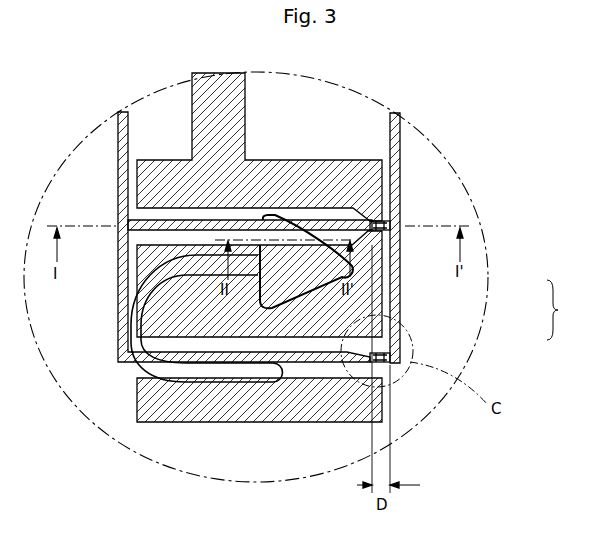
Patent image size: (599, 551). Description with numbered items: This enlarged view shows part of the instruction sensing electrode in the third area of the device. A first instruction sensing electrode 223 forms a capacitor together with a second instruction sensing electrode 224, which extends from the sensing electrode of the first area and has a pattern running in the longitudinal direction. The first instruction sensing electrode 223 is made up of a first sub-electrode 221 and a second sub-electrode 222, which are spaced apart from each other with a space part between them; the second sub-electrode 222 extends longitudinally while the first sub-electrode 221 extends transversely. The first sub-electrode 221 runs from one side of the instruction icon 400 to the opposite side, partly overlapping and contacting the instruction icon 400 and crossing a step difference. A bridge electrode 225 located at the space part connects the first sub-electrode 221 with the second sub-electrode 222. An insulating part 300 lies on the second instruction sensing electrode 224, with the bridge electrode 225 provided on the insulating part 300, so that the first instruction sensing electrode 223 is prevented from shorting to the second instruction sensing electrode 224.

The second instruction sensing electrode 224 is at (143, 178).
The insulating part 300 is at (400, 158).
The bridge electrode 225 is at (393, 224).
The second sub-electrode 222 is at (375, 292).
The first sub-electrode 221 is at (372, 326).
The first instruction sensing electrode 223 is at (568, 310).
The instruction icon 400 is at (222, 380).